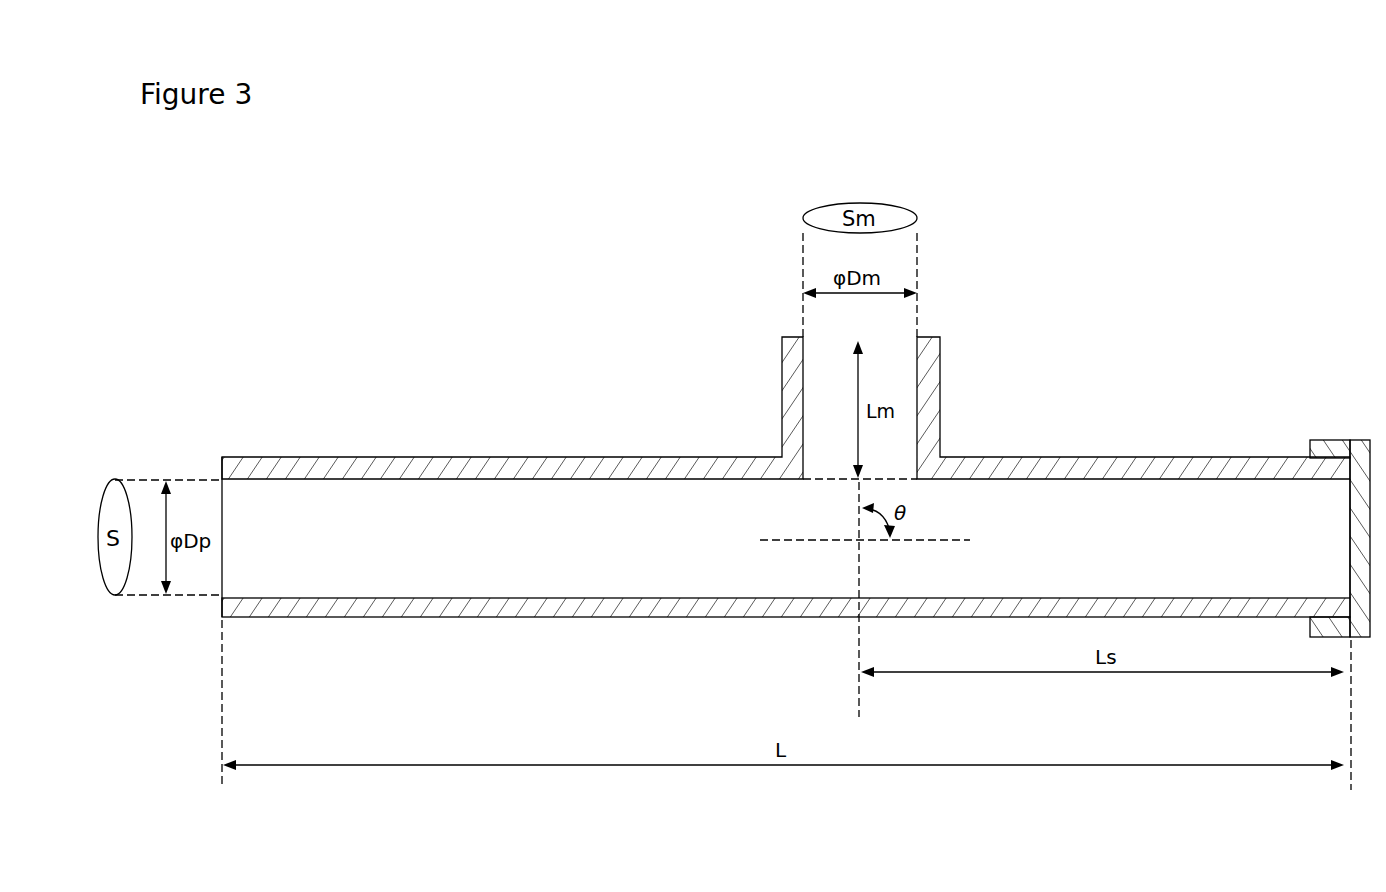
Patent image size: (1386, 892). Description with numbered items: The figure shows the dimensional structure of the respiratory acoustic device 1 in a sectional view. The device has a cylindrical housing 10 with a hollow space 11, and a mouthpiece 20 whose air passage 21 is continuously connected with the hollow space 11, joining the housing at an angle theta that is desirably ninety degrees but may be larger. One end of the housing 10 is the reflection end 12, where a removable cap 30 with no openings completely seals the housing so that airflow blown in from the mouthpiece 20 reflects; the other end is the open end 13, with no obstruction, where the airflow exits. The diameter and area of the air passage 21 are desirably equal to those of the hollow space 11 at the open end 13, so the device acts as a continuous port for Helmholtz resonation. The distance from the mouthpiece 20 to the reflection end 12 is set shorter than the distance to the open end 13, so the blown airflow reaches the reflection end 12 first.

The respiratory acoustic device 1 is at (1132, 375).
The housing 10 is at (538, 440).
The hollow space 11 is at (440, 505).
The reflection end 12 is at (1347, 540).
The open end 13 is at (222, 510).
The mouthpiece 20 is at (760, 372).
The air passage 21 is at (897, 370).
The removable cap 30 is at (1345, 430).